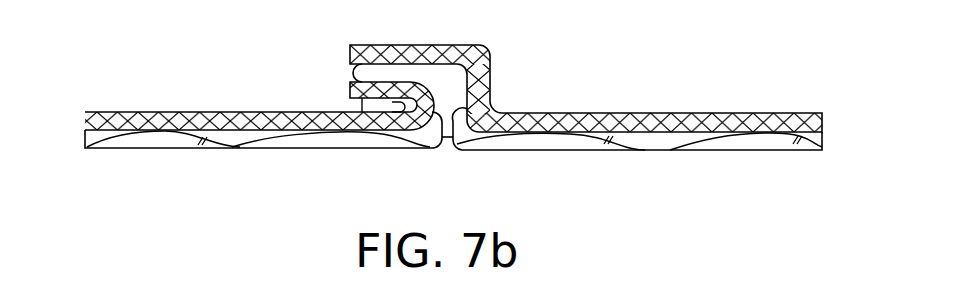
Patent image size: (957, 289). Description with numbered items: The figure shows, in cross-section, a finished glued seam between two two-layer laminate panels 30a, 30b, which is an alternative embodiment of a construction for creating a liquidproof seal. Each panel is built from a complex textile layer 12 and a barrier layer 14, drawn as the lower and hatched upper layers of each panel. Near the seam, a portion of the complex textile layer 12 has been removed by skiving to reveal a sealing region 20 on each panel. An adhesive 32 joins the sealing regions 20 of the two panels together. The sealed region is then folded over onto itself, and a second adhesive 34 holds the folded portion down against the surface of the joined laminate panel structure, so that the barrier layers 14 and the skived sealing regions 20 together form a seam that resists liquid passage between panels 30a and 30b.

The complex textile layer 12 is at (167, 142).
The barrier layer 14 is at (133, 110).
The sealing region 20 is at (419, 62).
The laminate panel 30a is at (78, 103).
The laminate panel 30b is at (828, 103).
The adhesive 32 is at (453, 80).
The second adhesive 34 is at (357, 101).